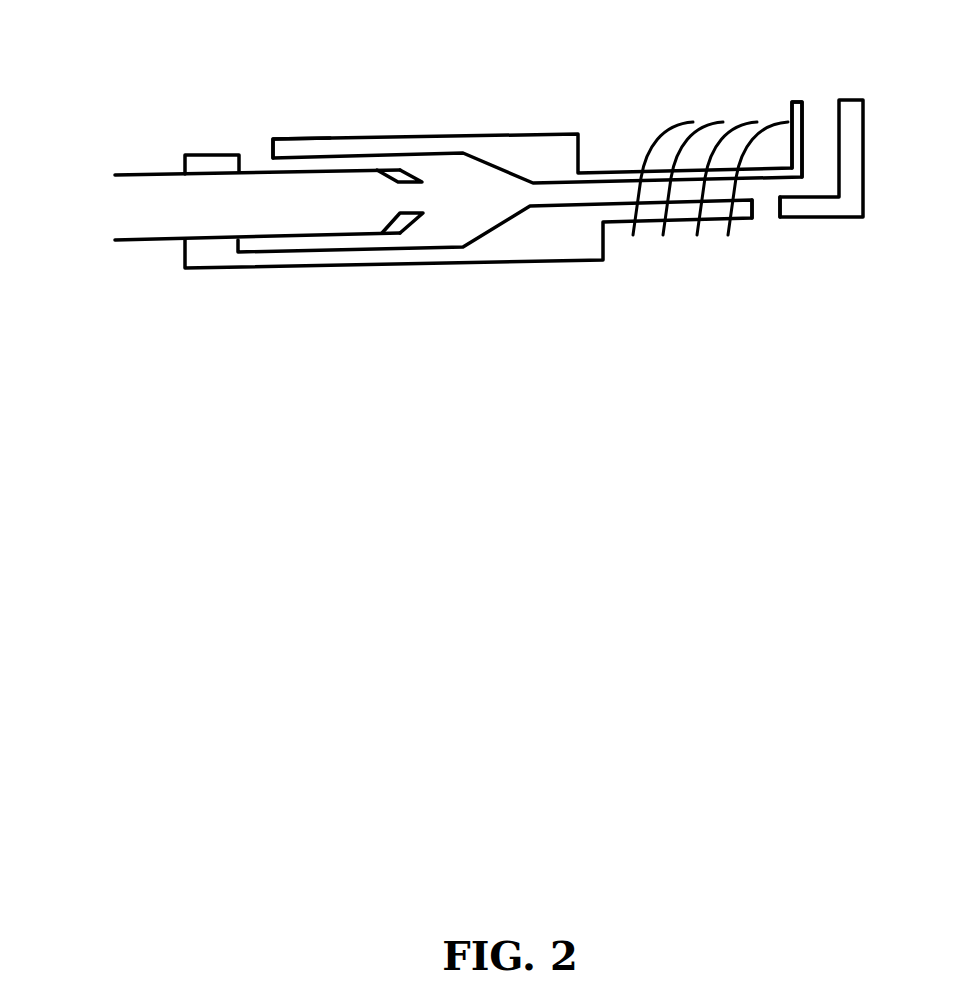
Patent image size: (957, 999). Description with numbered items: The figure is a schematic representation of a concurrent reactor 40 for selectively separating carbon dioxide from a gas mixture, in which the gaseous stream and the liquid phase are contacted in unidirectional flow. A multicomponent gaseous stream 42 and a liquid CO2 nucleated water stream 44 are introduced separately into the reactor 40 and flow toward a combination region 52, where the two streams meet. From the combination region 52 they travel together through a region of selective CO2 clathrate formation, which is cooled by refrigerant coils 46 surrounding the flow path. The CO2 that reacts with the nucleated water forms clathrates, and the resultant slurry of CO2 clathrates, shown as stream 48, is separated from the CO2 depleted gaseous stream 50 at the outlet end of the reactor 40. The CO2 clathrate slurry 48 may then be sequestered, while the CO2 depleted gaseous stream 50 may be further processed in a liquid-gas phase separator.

The concurrent reactor 40 is at (451, 275).
The multicomponent gaseous stream 42 is at (166, 212).
The liquid CO2 nucleated water stream 44 is at (256, 134).
The refrigerant coils 46 is at (639, 102).
The CO2 clathrate slurry stream 48 is at (765, 197).
The CO2 depleted gaseous stream 50 is at (827, 135).
The combination region 52 is at (425, 201).